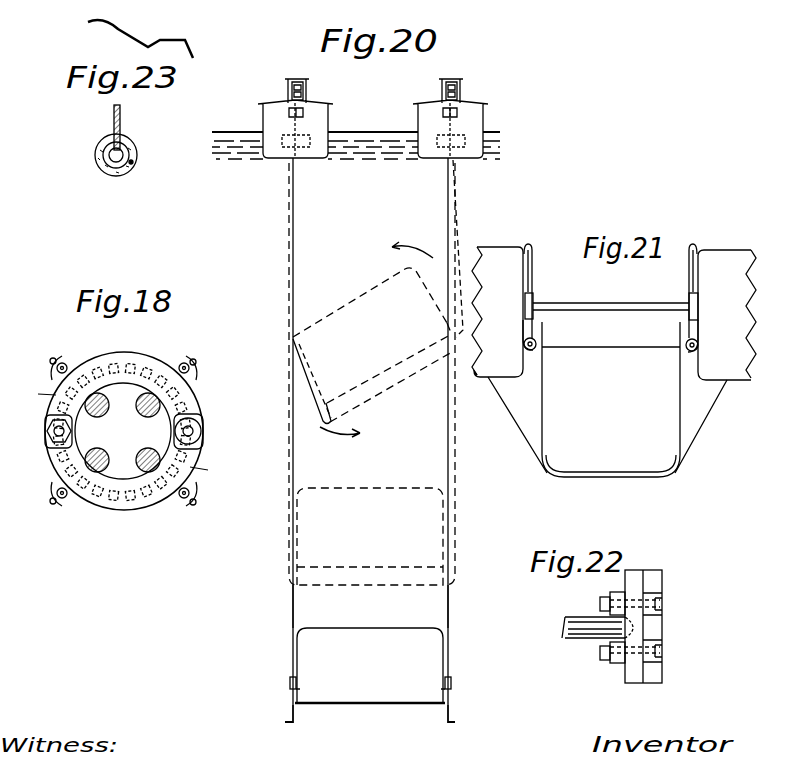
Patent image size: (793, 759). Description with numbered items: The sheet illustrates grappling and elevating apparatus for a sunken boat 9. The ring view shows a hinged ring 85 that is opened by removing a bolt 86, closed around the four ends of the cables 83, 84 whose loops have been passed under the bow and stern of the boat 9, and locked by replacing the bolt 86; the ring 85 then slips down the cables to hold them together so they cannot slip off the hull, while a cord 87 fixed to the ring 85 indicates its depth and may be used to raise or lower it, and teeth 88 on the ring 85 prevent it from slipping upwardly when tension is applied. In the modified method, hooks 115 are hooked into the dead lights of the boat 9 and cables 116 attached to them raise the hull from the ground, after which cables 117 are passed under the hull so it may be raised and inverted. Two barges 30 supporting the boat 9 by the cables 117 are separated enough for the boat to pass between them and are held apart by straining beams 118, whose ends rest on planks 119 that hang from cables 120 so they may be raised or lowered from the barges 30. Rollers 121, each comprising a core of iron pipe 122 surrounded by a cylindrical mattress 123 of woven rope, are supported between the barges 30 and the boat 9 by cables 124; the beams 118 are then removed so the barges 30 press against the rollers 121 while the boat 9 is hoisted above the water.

In FIG. 20, the sunken boat 9 is at (370, 482).
In FIG. 21, the sunken boat 9 is at (611, 399).
In FIG. 20, the barges 30 is at (278, 160).
In FIG. 21, the barges 30 is at (486, 372).
In FIG. 18, the cable 83 is at (150, 417).
In FIG. 18, the cable 84 is at (104, 417).
In FIG. 18, the hinged ring 85 is at (128, 510).
In FIG. 18, the bolt 86 is at (45, 426).
In FIG. 18, the cord 87 is at (196, 363).
In FIG. 18, the teeth 88 is at (115, 432).
In FIG. 20, the hooks 115 is at (289, 686).
In FIG. 20, the cables 116 is at (290, 606).
In FIG. 20, the cables 117 is at (288, 442).
In FIG. 21, the cables 117 is at (498, 392).
In FIG. 22, the straining beams 118 is at (564, 620).
In FIG. 21, the planks 119 is at (525, 302).
In FIG. 22, the planks 119 is at (665, 590).
In FIG. 21, the cables 120 is at (533, 272).
In FIG. 23, the rollers 121 is at (95, 158).
In FIG. 21, the rollers 121 is at (525, 350).
In FIG. 23, the core of iron pipe 122 is at (108, 168).
In FIG. 23, the cylindrical mattress 123 is at (133, 163).
In FIG. 23, the cables 124 is at (112, 120).
In FIG. 21, the cables 124 is at (529, 246).